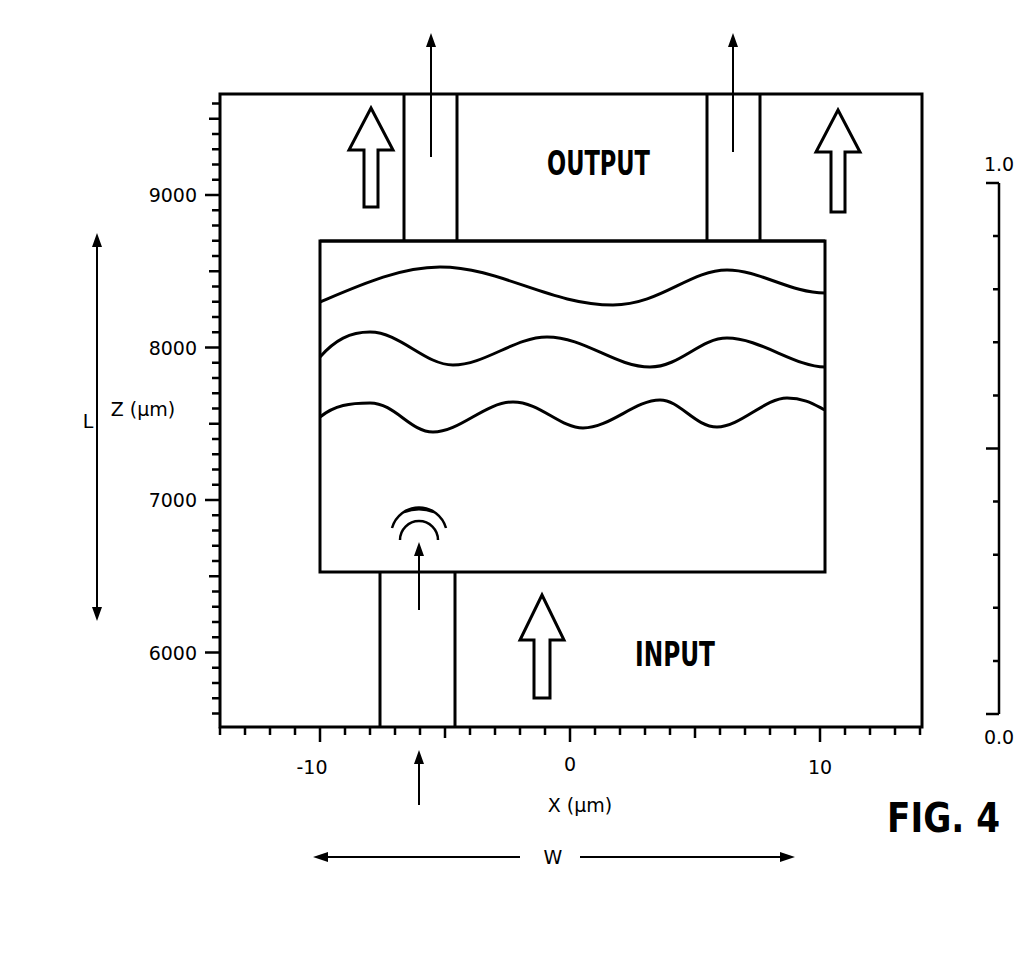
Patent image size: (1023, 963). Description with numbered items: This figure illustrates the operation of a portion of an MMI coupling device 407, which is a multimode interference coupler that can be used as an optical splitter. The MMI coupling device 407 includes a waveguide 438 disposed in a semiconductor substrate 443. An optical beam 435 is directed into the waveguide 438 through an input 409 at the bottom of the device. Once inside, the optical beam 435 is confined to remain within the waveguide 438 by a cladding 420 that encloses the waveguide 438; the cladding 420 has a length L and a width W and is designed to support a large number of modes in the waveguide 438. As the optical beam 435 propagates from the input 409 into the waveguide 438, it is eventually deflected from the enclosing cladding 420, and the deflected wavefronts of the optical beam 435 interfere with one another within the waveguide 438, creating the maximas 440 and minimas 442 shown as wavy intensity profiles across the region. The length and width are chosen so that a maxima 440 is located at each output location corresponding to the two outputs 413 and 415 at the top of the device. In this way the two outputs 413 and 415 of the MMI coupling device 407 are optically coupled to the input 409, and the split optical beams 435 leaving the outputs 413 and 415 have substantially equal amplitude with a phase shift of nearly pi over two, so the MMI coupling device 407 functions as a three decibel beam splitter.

The MMI coupling device 407 is at (872, 93).
The input 409 is at (415, 722).
The output 413 is at (405, 92).
The output 415 is at (757, 93).
The cladding 420 is at (320, 352).
The optical beam 435 is at (432, 63).
The waveguide 438 is at (330, 240).
The maxima 440 is at (452, 268).
The minima 442 is at (322, 300).
The semiconductor substrate 443 is at (870, 193).